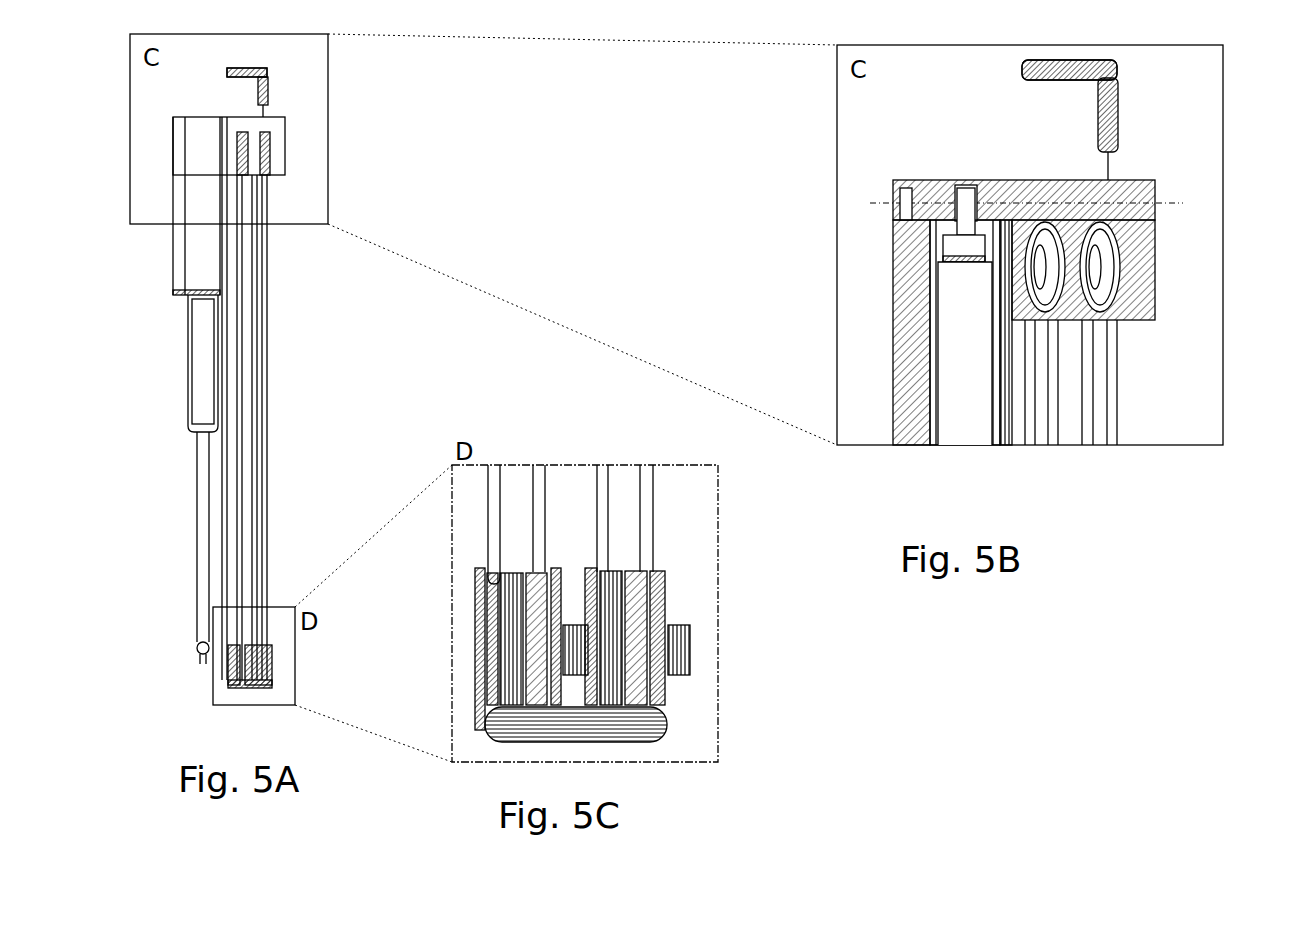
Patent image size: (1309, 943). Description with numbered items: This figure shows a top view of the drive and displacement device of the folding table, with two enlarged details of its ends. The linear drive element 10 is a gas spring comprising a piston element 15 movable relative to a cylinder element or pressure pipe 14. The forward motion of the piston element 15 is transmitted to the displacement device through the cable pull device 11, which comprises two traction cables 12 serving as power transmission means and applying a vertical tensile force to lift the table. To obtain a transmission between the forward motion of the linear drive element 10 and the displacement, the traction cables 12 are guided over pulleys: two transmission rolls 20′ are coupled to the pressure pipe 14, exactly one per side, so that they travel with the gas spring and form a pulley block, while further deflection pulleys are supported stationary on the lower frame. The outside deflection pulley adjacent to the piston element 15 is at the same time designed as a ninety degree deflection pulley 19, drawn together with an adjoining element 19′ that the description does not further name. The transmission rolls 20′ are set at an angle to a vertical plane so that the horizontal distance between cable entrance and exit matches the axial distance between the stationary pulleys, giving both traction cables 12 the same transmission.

In FIG. 5A, the linear drive element 10 is at (186, 405).
In FIG. 5B, the linear drive element 10 is at (946, 305).
In FIG. 5A, the cable pull device 11 is at (276, 405).
In FIG. 5B, the cable pull device 11 is at (1136, 428).
In FIG. 5A, the traction cables 12 is at (246, 480).
In FIG. 5B, the traction cables 12 is at (1086, 440).
In FIG. 5C, the traction cables 12 is at (496, 482).
In FIG. 5A, the pressure pipe 14 is at (192, 345).
In FIG. 5A, the piston element 15 is at (197, 512).
In FIG. 5A, the 90° deflection pulley 19 is at (272, 95).
In FIG. 5B, the 90° deflection pulley 19 is at (1122, 108).
In FIG. 5C, the 90° deflection pulley 19 is at (478, 650).
In FIG. 5A, the connector bar 19′ is at (222, 74).
In FIG. 5B, the connector bar 19′ is at (1040, 85).
In FIG. 5C, the connector bar 19′ is at (636, 740).
In FIG. 5B, the transmission rolls 20′ is at (1055, 295).